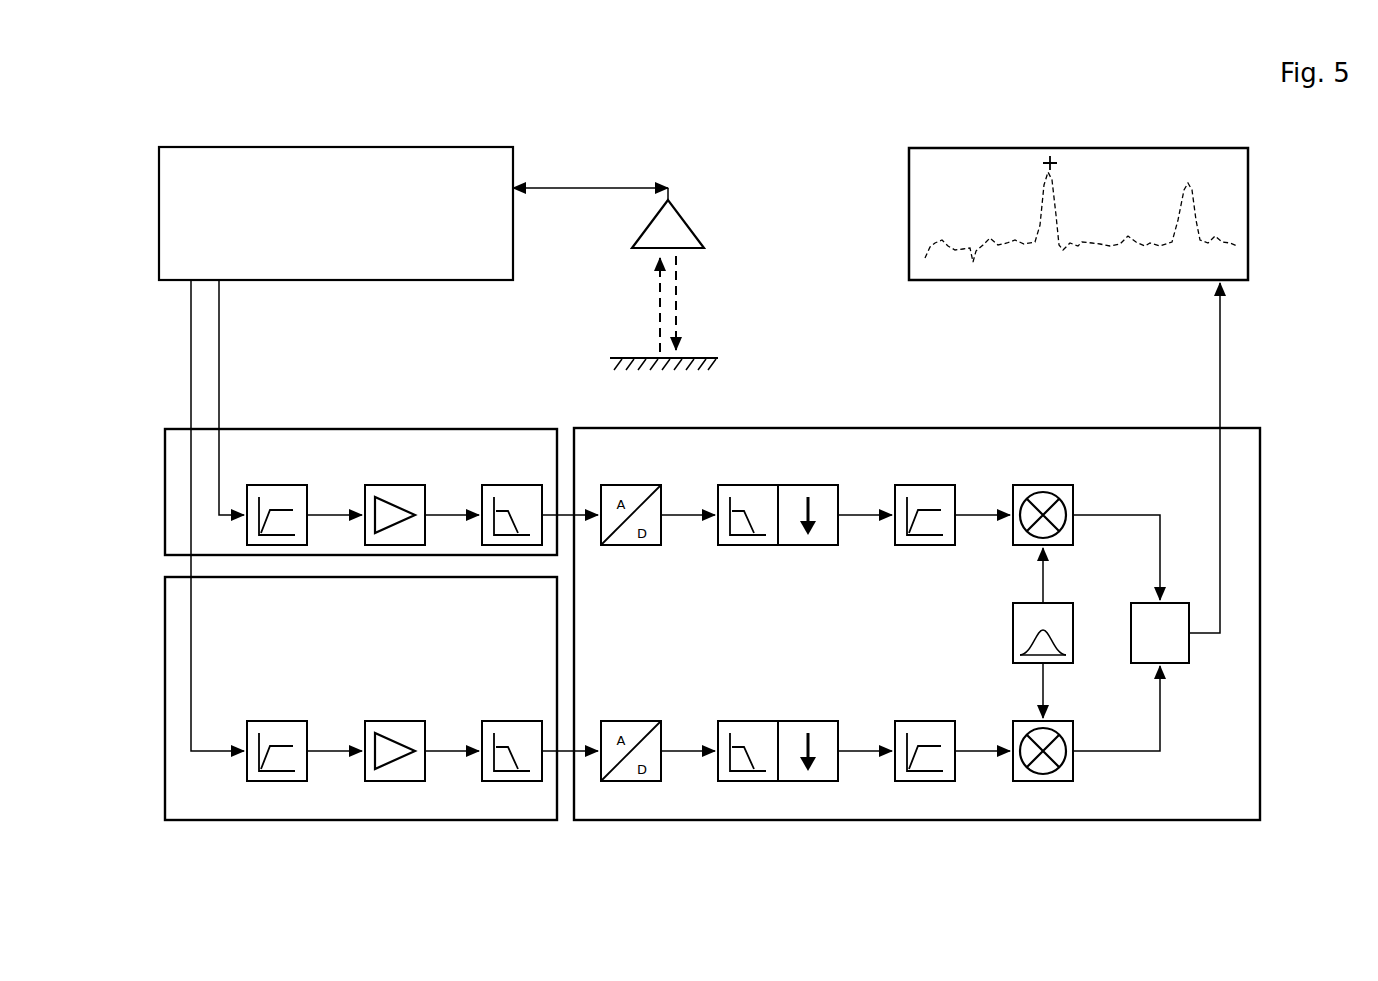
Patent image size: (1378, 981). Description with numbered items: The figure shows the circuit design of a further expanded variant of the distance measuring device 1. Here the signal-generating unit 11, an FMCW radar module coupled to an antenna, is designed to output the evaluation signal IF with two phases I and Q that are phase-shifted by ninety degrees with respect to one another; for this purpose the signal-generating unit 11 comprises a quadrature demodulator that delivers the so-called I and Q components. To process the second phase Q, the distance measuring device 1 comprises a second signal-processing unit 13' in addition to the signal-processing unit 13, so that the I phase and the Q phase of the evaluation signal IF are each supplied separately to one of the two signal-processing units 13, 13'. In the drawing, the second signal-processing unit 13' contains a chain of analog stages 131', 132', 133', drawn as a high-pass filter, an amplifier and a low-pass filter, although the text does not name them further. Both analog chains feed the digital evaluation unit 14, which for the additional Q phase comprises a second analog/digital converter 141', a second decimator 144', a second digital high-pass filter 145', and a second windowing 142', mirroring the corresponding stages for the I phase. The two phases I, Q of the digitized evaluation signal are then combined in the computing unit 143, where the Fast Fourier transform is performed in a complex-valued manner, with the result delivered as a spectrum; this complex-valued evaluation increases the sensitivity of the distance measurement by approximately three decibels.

The distance measuring device 1 is at (226, 94).
The signal-generating unit 11 is at (455, 147).
The signal-processing unit 13 is at (361, 441).
The second signal-processing unit 13' is at (361, 749).
The high-pass filter 131' is at (273, 709).
The amplifier 132' is at (397, 708).
The low-pass filter 133' is at (519, 708).
The digital evaluation unit 14 is at (928, 822).
The second analog/digital converter 141' is at (636, 697).
The second windowing 142' is at (1085, 732).
The computing unit 143 is at (1190, 641).
The second decimator 144' is at (778, 698).
The second digital high-pass filter 145' is at (932, 700).